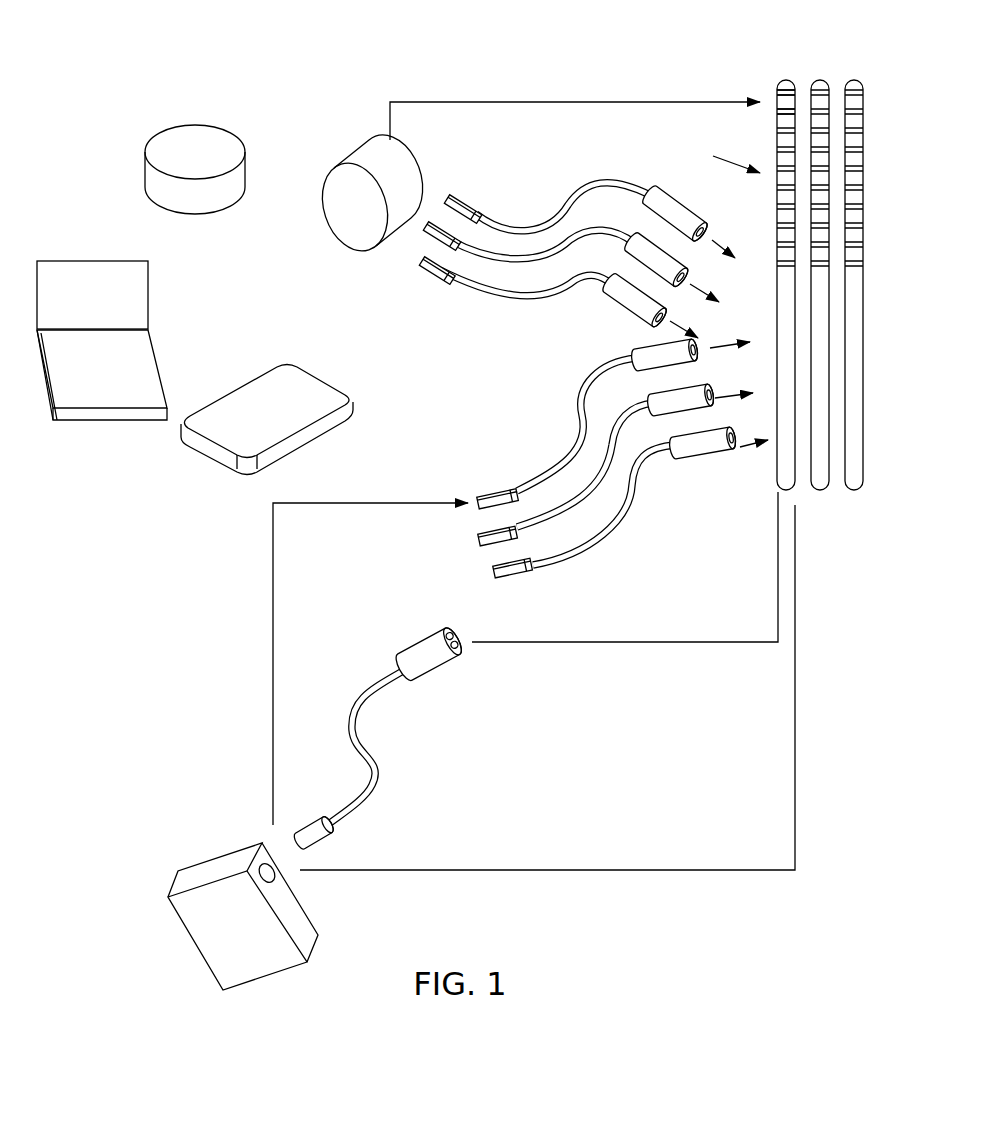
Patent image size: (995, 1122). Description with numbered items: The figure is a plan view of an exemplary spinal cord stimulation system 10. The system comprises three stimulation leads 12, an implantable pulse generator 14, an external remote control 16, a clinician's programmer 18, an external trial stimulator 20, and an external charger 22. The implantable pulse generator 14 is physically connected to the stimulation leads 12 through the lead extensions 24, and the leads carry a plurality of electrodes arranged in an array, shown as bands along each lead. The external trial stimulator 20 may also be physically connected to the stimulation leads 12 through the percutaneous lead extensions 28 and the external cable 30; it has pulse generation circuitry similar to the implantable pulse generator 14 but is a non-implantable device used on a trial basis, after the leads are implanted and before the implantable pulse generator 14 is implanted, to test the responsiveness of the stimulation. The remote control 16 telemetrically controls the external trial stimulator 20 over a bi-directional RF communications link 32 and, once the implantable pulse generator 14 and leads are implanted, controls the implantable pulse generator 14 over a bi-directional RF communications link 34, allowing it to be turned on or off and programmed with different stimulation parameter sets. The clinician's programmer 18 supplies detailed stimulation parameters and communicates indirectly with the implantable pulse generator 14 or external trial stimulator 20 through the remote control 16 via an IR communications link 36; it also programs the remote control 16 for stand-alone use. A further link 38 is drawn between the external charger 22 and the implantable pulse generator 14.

The SCS system 10 is at (542, 56).
The stimulation leads 12 is at (853, 79).
The implantable pulse generator (IPG) 14 is at (352, 157).
The external remote control (RC) 16 is at (277, 380).
The Clinician's Programmer (CP) 18 is at (78, 275).
The External Trial Stimulator (ETS) 20 is at (215, 868).
The external charger 22 is at (195, 132).
The lead extensions 24 is at (593, 275).
The percutaneous lead extensions 28 is at (565, 513).
The external cable 30 is at (373, 681).
The bi-directional RF communications link 32 is at (220, 502).
The bi-directional RF communications link 34 is at (332, 353).
The IR communications link 36 is at (113, 440).
The inductive link (charger-IPG) 38 is at (312, 233).